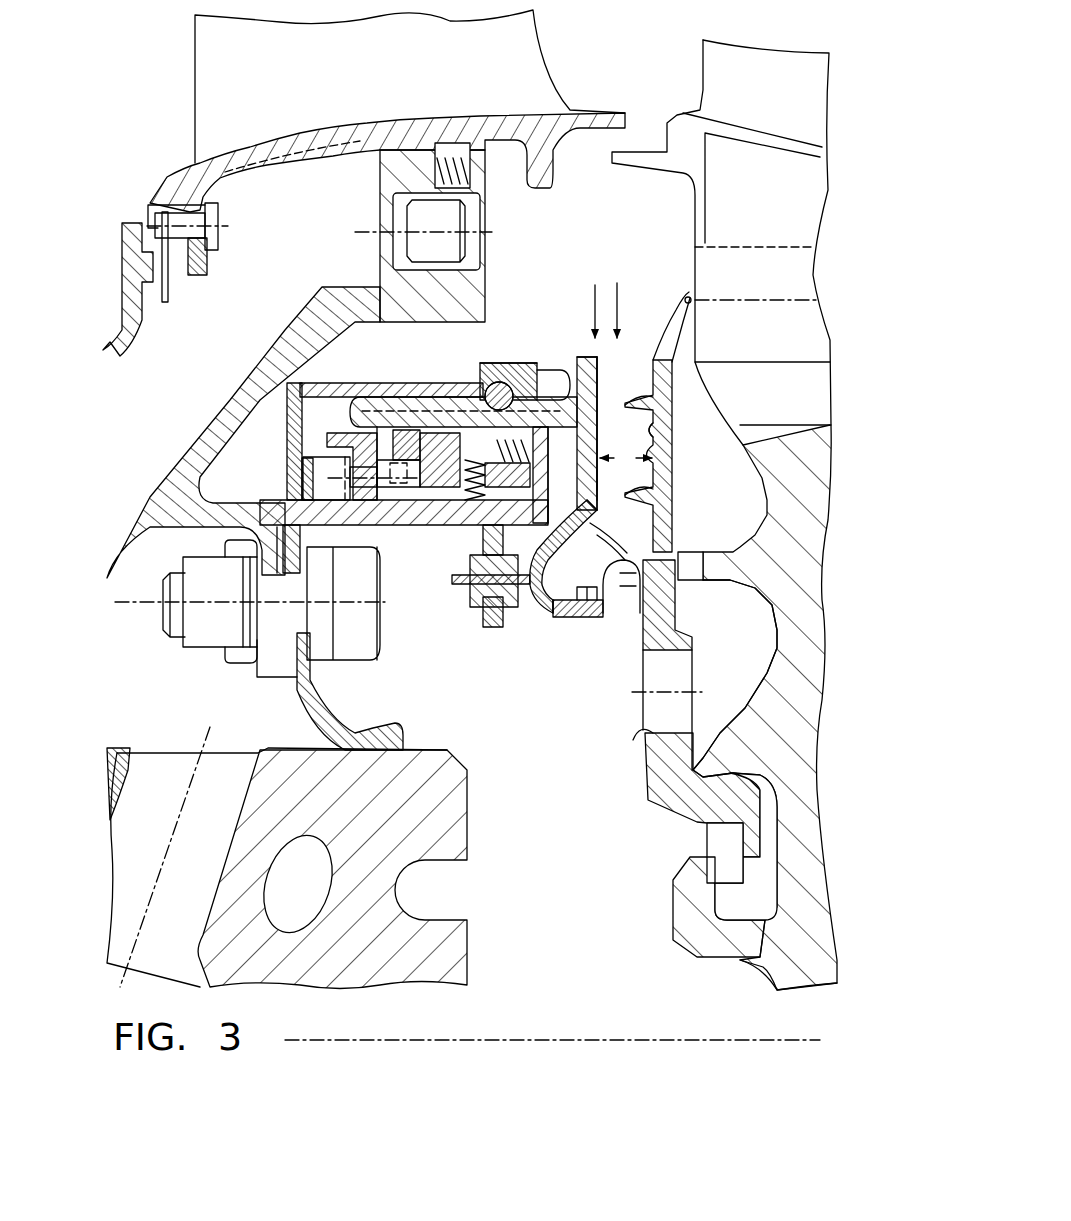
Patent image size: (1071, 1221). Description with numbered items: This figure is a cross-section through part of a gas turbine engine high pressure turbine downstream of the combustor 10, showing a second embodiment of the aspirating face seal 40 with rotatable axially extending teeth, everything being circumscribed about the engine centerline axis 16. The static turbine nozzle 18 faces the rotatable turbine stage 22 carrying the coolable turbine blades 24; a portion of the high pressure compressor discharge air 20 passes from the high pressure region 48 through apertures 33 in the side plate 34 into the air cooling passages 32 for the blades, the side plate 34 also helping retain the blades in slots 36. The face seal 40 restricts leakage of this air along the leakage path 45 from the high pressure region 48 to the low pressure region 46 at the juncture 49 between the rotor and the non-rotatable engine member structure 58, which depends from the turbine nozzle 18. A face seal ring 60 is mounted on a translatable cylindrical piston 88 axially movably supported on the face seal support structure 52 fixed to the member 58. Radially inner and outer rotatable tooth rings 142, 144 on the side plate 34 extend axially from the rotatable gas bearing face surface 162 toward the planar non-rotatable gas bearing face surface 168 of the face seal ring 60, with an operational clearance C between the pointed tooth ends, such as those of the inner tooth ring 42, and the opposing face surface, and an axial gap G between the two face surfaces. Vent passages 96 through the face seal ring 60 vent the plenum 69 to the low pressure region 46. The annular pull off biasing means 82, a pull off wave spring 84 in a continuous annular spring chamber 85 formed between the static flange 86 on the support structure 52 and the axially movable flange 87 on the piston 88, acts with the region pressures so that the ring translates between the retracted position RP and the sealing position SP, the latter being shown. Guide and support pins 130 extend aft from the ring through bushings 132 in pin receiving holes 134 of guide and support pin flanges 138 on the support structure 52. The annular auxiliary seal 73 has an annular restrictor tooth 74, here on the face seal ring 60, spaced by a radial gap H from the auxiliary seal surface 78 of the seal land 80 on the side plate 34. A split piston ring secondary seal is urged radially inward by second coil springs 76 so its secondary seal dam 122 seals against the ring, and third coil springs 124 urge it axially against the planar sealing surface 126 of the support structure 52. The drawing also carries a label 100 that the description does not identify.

The combustor 10 is at (132, 103).
The engine centerline axis 16 is at (575, 1040).
The static turbine nozzle 18 is at (195, 38).
The high pressure compressor discharge air 20 is at (443, 883).
The rotatable turbine stage 22 is at (713, 970).
The coolable turbine blades 24 is at (793, 91).
The air cooling passages 32 is at (743, 667).
The apertures 33 is at (648, 738).
The side plate 34 is at (660, 803).
The slots 36 is at (783, 425).
The aspirating face seal 40 is at (536, 300).
The inner tooth ring 42 is at (653, 508).
The leakage path 45 is at (556, 617).
The low pressure region 46 is at (609, 215).
The high pressure region 48 is at (514, 724).
The juncture 49 is at (618, 697).
The face seal support structure 52 is at (382, 527).
The non-rotatable engine member structure 58 is at (235, 400).
The face seal ring 60 is at (573, 360).
The plenum 69 is at (626, 434).
The annular auxiliary seal 73 is at (647, 582).
The annular restrictor tooth 74 is at (633, 560).
The second coil springs 76 is at (473, 500).
The auxiliary seal surface 78 is at (628, 533).
The annular seal land 80 is at (610, 613).
The annular pull off biasing means 82 is at (310, 436).
The pull off wave spring 84 is at (318, 482).
The annular spring chamber 85 is at (313, 450).
The static flange 86 is at (362, 500).
The axially movable flange 87 is at (295, 468).
The translatable cylindrical piston 88 is at (383, 383).
The vent passages 96 is at (596, 482).
The seal runner 100 is at (648, 478).
The secondary seal dam 122 is at (393, 403).
The third coil springs 124 is at (653, 380).
The sealing surface 126 is at (451, 475).
The guide and support pins 130 is at (527, 607).
The bushings 132 is at (560, 552).
The pin receiving holes 134 is at (472, 600).
The guide and support pin flanges 138 is at (490, 630).
The inner rotatable tooth ring 142 is at (670, 497).
The outer rotatable tooth ring 144 is at (628, 407).
The rotatable gas bearing face surface 162 is at (598, 362).
The non-rotatable gas bearing face surface 168 is at (663, 422).
The operational clearance C is at (680, 377).
The axial gap G is at (650, 456).
The radial gap H is at (630, 540).
The retracted position RP is at (595, 305).
The sealing position SP is at (617, 305).